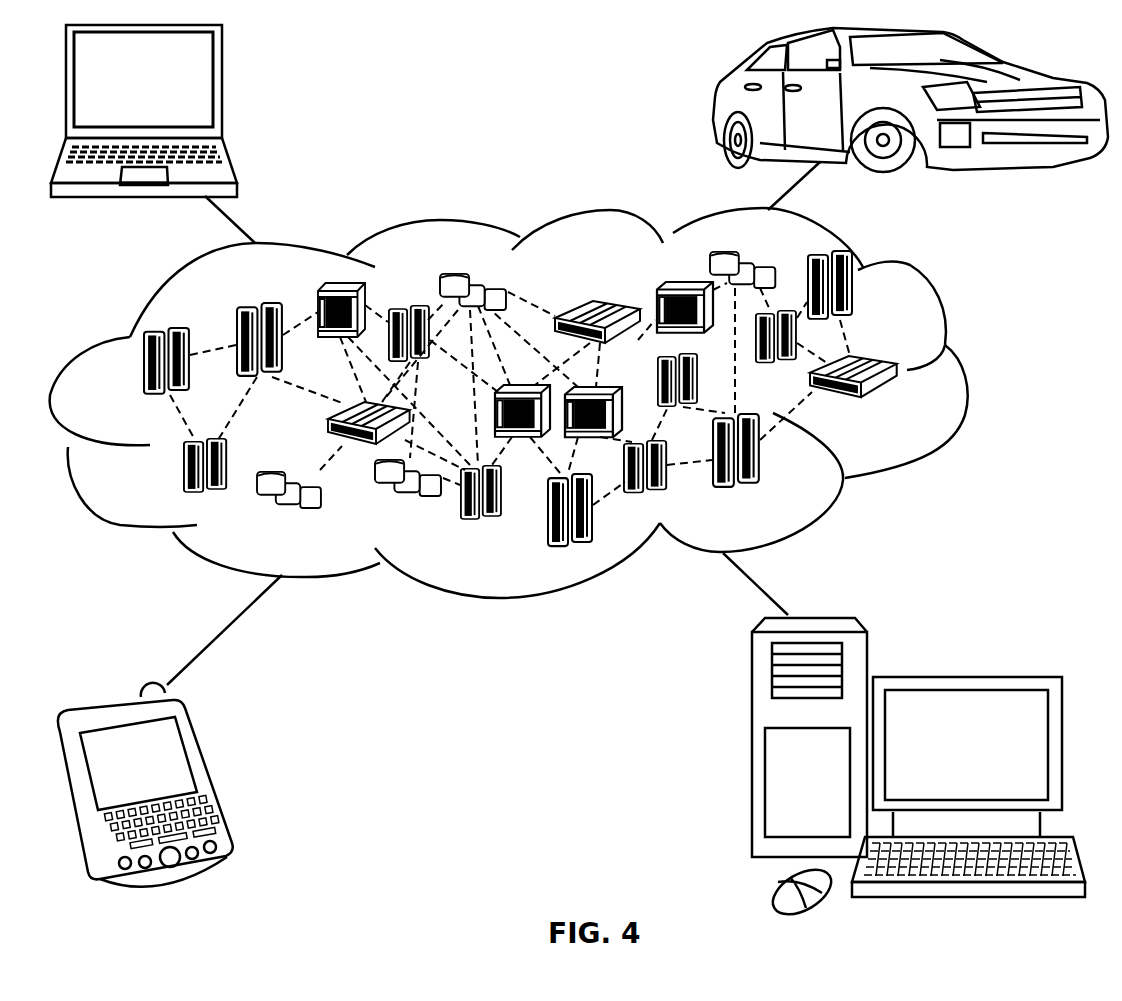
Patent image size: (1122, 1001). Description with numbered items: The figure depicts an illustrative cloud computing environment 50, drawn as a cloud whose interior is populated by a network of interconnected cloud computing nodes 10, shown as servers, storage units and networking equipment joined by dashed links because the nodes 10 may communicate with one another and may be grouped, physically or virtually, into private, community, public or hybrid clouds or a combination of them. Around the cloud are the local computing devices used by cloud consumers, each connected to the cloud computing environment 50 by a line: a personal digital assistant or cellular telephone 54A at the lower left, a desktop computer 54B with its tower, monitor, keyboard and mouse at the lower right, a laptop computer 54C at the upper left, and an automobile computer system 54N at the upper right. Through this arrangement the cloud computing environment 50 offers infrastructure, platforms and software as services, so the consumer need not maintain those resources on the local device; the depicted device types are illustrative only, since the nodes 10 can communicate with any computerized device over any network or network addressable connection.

The cloud computing node 10 is at (893, 404).
The cloud computing environment 50 is at (542, 403).
The personal digital assistant or cellular telephone 54A is at (210, 777).
The desktop computer 54B is at (965, 677).
The laptop computer 54C is at (222, 92).
The automobile computer system 54N is at (720, 104).